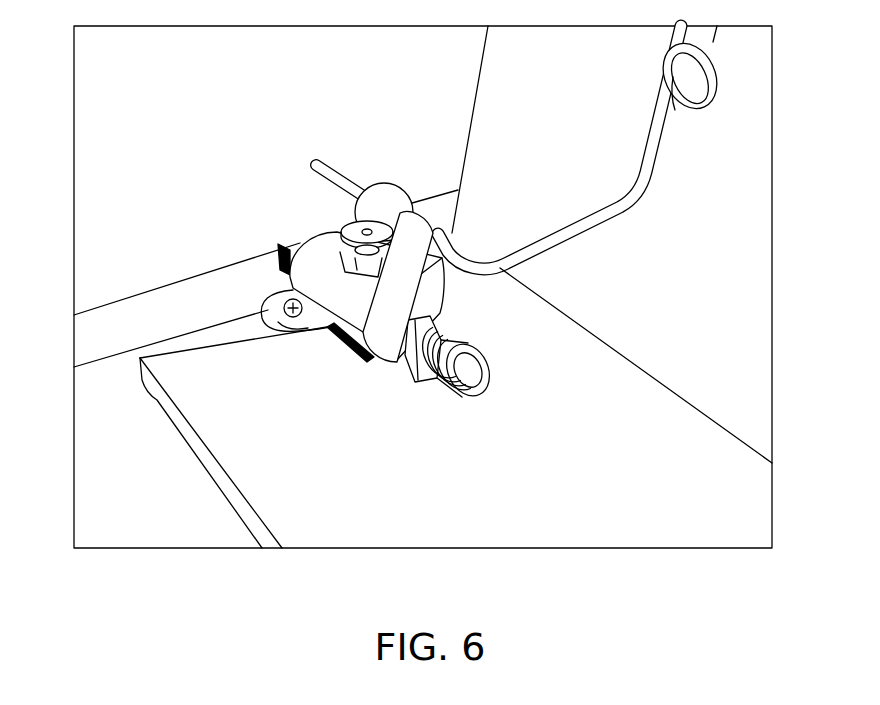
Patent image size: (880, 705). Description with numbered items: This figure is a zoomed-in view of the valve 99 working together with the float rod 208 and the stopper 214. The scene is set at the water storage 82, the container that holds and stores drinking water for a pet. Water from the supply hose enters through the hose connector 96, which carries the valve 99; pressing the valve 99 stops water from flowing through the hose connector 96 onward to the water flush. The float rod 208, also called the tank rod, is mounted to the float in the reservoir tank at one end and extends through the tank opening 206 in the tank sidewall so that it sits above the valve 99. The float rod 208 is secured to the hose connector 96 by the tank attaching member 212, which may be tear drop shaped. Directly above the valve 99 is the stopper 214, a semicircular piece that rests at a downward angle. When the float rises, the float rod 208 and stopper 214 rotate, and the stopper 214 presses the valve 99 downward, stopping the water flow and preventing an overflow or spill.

The water storage 82 is at (140, 118).
The hose connector 96 is at (350, 318).
The valve 99 is at (367, 256).
The tank opening 206 is at (710, 70).
The float rod 208 is at (665, 122).
The tank attaching member 212 is at (377, 330).
The stopper 214 is at (385, 200).